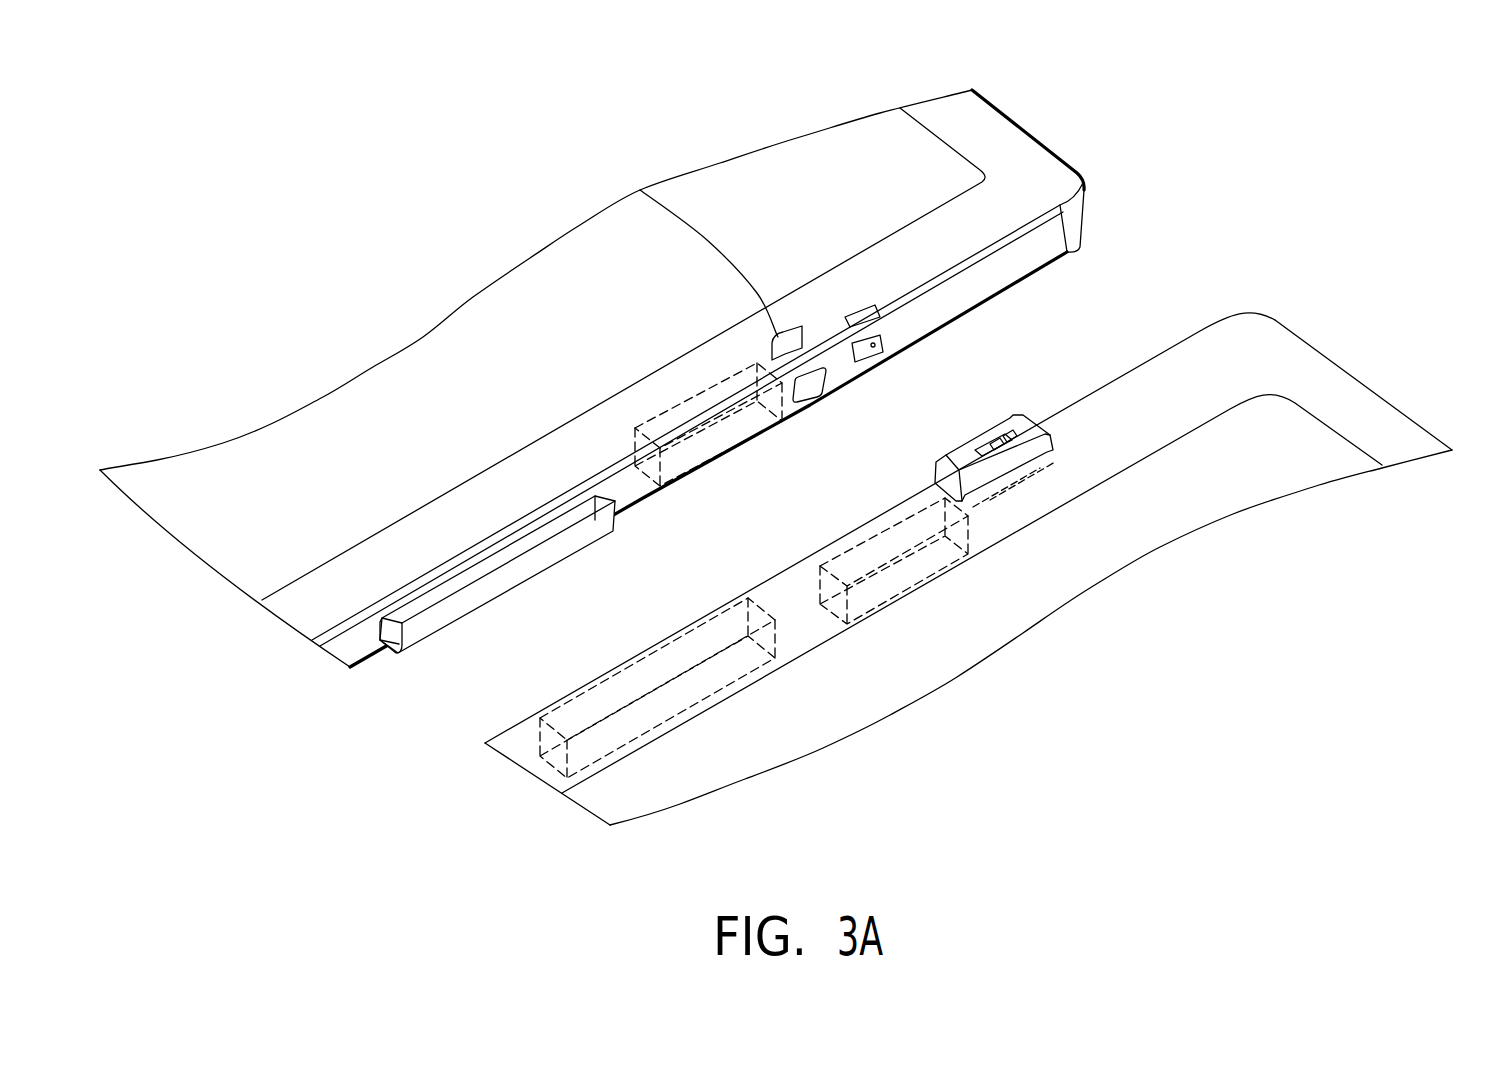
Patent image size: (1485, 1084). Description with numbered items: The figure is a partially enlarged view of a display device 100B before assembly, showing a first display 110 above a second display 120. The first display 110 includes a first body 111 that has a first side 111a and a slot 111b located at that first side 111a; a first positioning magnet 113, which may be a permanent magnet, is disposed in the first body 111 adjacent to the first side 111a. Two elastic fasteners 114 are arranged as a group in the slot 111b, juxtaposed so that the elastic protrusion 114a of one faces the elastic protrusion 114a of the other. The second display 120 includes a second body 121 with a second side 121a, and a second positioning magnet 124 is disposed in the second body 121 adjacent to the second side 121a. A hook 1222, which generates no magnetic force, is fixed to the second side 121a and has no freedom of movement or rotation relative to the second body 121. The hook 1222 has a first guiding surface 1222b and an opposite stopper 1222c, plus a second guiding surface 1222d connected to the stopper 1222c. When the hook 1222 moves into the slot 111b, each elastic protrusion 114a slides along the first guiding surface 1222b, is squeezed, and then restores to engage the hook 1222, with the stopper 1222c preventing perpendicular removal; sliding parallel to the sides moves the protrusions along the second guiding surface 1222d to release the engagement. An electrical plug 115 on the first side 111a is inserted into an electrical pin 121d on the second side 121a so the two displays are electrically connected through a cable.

The display device 100B is at (1447, 865).
The first display 110 is at (1077, 118).
The first body 111 is at (972, 112).
The first side 111a is at (1043, 247).
The slot 111b is at (920, 317).
The first positioning magnet 113 is at (682, 402).
The elastic fastener 114 is at (824, 345).
The elastic protrusion 114a is at (828, 372).
The electrical plug 115 is at (512, 580).
The second display 120 is at (1378, 325).
The second body 121 is at (1267, 333).
The second side 121a is at (772, 577).
The electrical pin 121d is at (567, 790).
The hook 1222 is at (1013, 418).
The first guiding surface 1222b is at (977, 447).
The stopper 1222c is at (997, 447).
The second guiding surface 1222d is at (1007, 437).
The second positioning magnet 124 is at (917, 578).